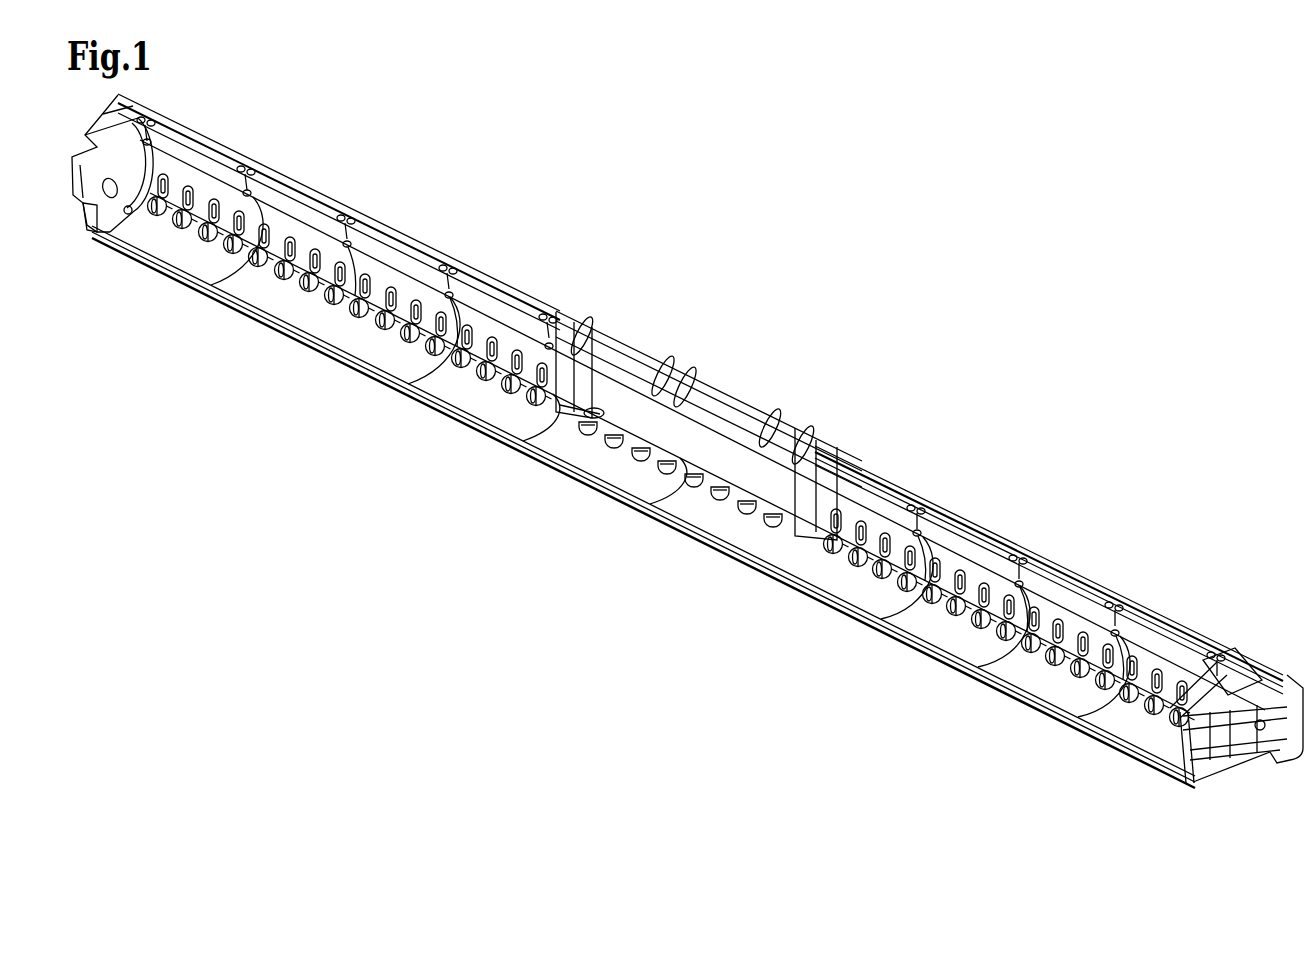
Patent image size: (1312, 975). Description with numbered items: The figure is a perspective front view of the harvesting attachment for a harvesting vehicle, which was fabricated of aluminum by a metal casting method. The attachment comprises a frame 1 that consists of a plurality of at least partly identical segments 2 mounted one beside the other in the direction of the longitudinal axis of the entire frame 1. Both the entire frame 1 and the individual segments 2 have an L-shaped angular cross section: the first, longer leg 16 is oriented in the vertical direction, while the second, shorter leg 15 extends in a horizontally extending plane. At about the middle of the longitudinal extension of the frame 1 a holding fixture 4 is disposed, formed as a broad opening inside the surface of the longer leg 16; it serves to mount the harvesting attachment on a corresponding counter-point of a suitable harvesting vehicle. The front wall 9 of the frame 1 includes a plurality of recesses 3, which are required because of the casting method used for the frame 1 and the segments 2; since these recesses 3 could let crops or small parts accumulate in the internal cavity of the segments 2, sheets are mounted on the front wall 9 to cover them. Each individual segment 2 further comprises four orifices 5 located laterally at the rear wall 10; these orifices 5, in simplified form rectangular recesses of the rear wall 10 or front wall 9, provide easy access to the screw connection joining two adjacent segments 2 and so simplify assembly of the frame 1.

The frame 1 is at (800, 343).
The segments 2 is at (1107, 743).
The recesses 3 is at (965, 592).
The holding fixture 4 is at (668, 352).
The orifices 5 is at (248, 169).
The front wall 9 is at (345, 387).
The rear wall 10 is at (533, 271).
The second, shorter leg 15 is at (858, 606).
The first, longer leg 16 is at (845, 538).